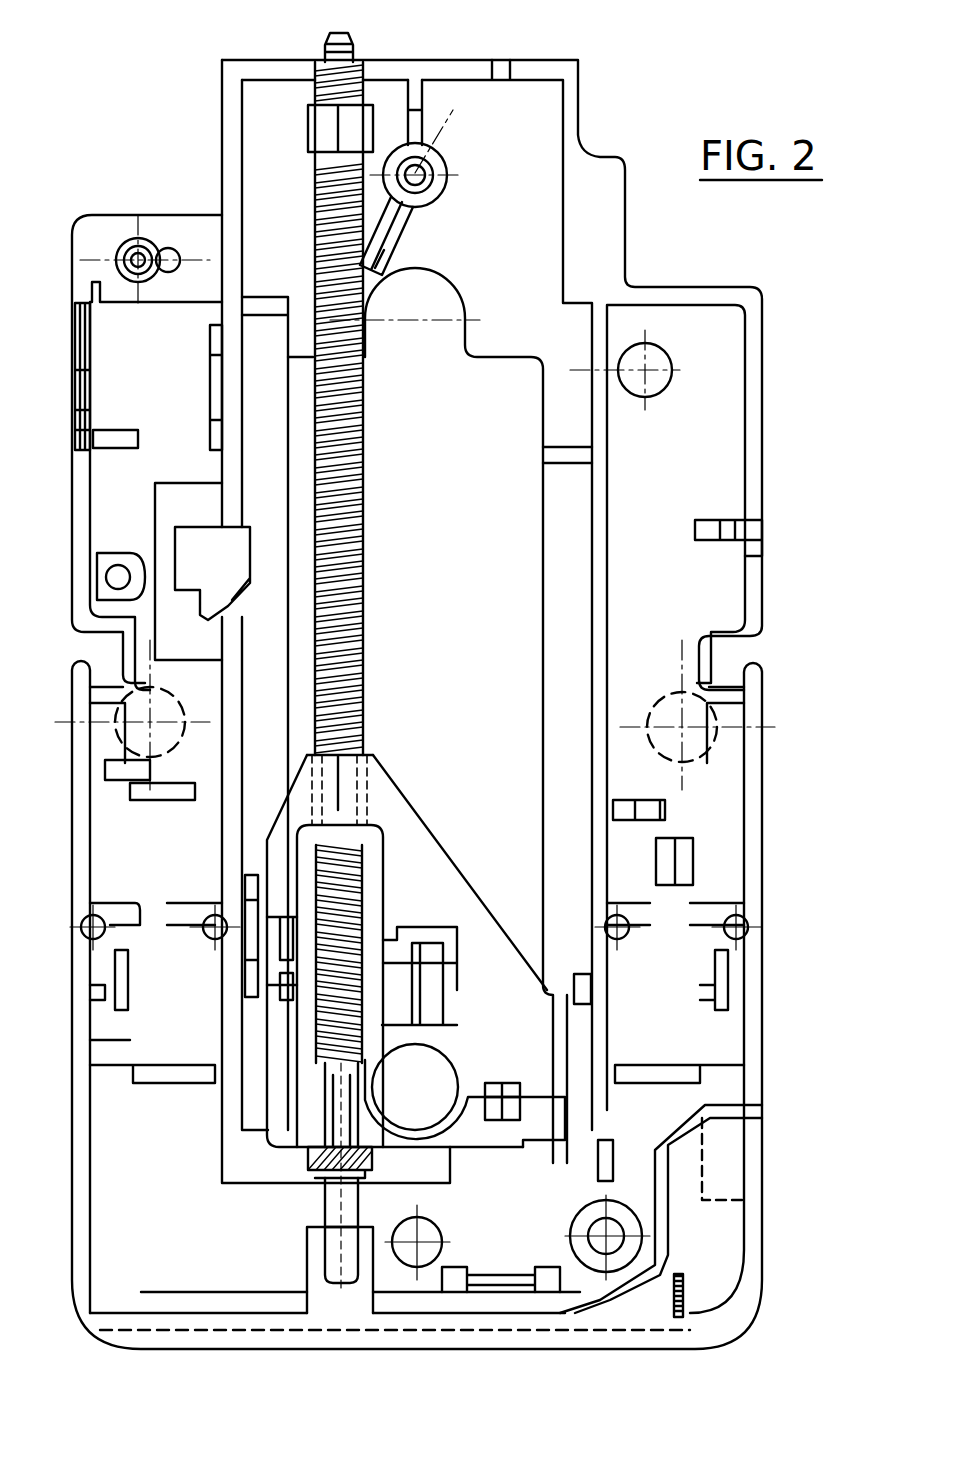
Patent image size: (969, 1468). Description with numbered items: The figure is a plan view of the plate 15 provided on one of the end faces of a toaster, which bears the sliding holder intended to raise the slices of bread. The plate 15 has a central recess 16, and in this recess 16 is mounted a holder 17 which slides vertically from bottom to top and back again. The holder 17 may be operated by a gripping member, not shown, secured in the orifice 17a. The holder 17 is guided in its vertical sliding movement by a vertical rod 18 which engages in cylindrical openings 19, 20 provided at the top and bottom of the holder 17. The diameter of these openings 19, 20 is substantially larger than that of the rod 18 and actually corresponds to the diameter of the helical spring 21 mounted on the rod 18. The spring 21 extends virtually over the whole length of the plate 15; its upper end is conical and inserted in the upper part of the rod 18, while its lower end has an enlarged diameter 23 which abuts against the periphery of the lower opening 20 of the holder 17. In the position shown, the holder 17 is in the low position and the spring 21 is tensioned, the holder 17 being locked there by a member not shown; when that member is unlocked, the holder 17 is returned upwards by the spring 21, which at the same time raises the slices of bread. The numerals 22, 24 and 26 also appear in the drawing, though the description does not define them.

The plate 15 is at (102, 838).
The central recess 16 is at (505, 640).
The holder 17 is at (410, 885).
The orifice 17a is at (453, 1095).
The vertical rod 18 is at (352, 1203).
The cylindrical opening 19 is at (385, 790).
The cylindrical opening 20 is at (282, 1150).
The helical spring 21 is at (365, 548).
The nut 22 is at (322, 127).
The enlarged diameter 23 is at (312, 1165).
The spindle end 24 is at (360, 45).
The latch 26 is at (190, 552).